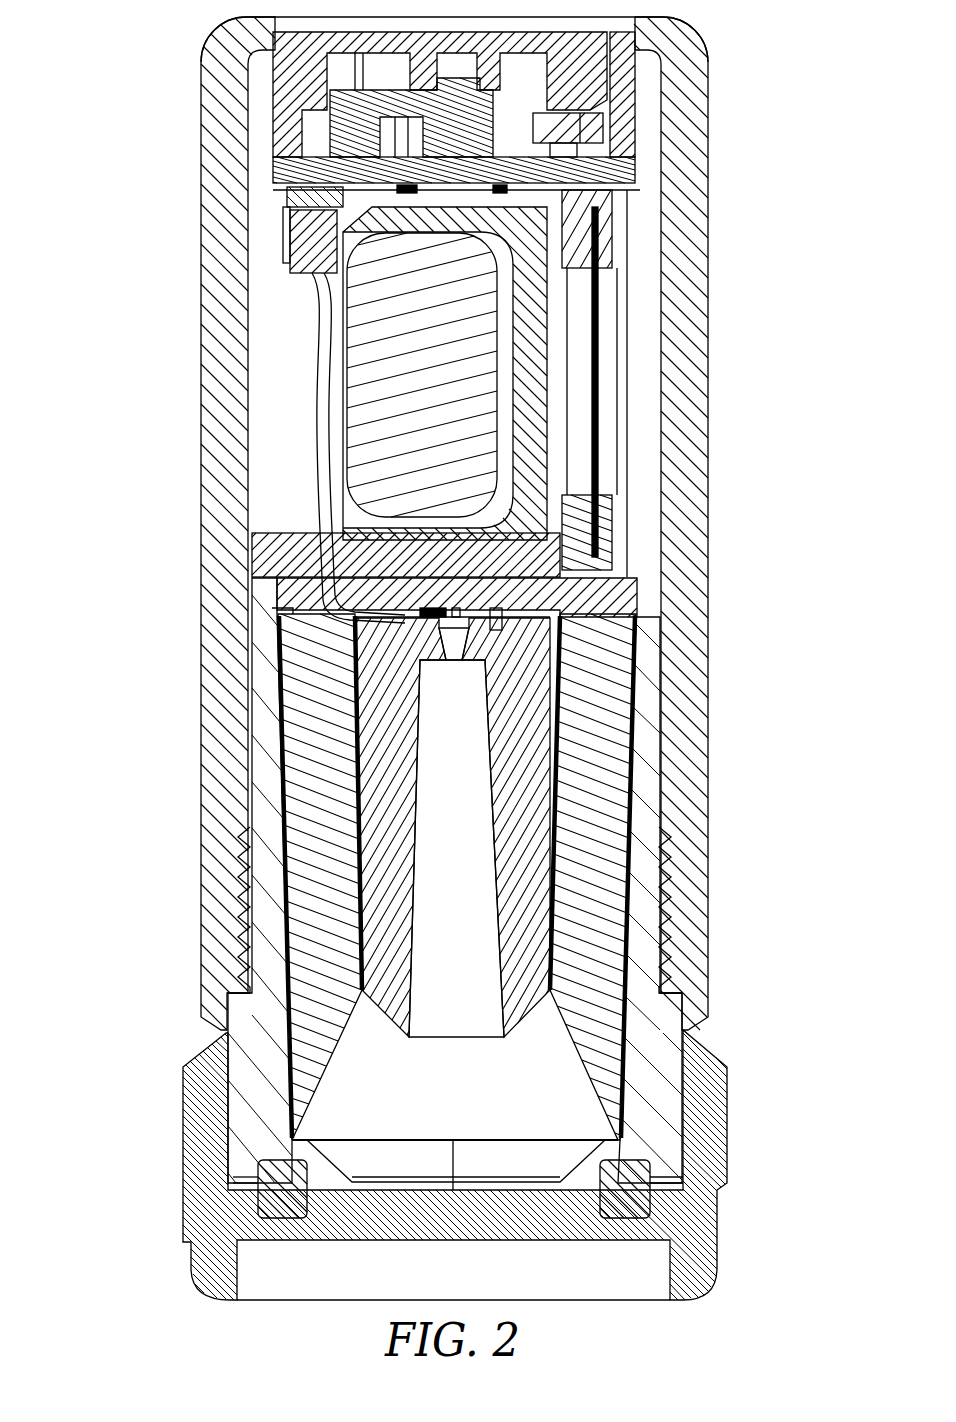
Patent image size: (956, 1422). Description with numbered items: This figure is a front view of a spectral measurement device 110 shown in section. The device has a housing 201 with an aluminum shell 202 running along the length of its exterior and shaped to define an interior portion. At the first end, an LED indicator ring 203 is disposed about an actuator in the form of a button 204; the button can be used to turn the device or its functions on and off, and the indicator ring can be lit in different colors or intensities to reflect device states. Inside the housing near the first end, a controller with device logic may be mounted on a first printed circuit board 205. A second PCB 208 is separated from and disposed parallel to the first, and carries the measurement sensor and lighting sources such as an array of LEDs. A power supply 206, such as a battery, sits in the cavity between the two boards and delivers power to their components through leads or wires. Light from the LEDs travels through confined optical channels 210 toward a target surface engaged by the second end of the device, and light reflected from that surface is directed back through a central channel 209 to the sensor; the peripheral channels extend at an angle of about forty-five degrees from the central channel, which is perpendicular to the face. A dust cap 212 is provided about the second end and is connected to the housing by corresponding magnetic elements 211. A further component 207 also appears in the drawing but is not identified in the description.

The spectral measurement device 110 is at (103, 228).
The housing 201 is at (200, 497).
The aluminum shell 202 is at (677, 740).
The LED indicator ring 203 is at (273, 70).
The button 204 is at (560, 64).
The first printed circuit board 205 is at (635, 163).
The power supply 206 is at (407, 367).
The connecting rod 207 is at (598, 335).
The second PCB 208 is at (637, 583).
The central channel 209 is at (437, 790).
The confined optical channels 210 is at (307, 962).
The magnetic elements 211 is at (258, 1157).
The dust cap 212 is at (188, 1235).